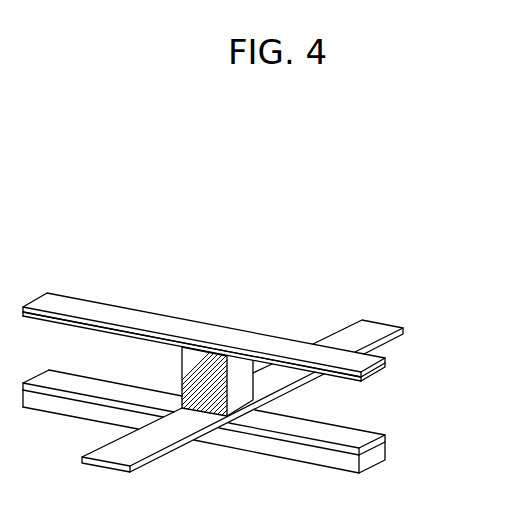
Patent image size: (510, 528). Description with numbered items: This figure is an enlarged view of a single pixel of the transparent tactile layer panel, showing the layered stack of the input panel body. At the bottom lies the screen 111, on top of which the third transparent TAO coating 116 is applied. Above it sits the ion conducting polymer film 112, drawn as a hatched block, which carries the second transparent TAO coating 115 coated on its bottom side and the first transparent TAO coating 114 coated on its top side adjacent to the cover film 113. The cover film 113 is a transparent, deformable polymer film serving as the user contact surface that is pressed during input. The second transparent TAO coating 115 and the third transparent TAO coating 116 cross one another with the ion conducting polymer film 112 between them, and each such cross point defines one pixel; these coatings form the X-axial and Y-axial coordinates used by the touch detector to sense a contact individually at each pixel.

The screen 111 is at (384, 453).
The ion conducting polymer film 112 is at (182, 368).
The cover film 113 is at (68, 305).
The first transparent TAO coating 114 is at (387, 366).
The second transparent TAO coating 115 is at (100, 463).
The third transparent TAO coating 116 is at (386, 436).